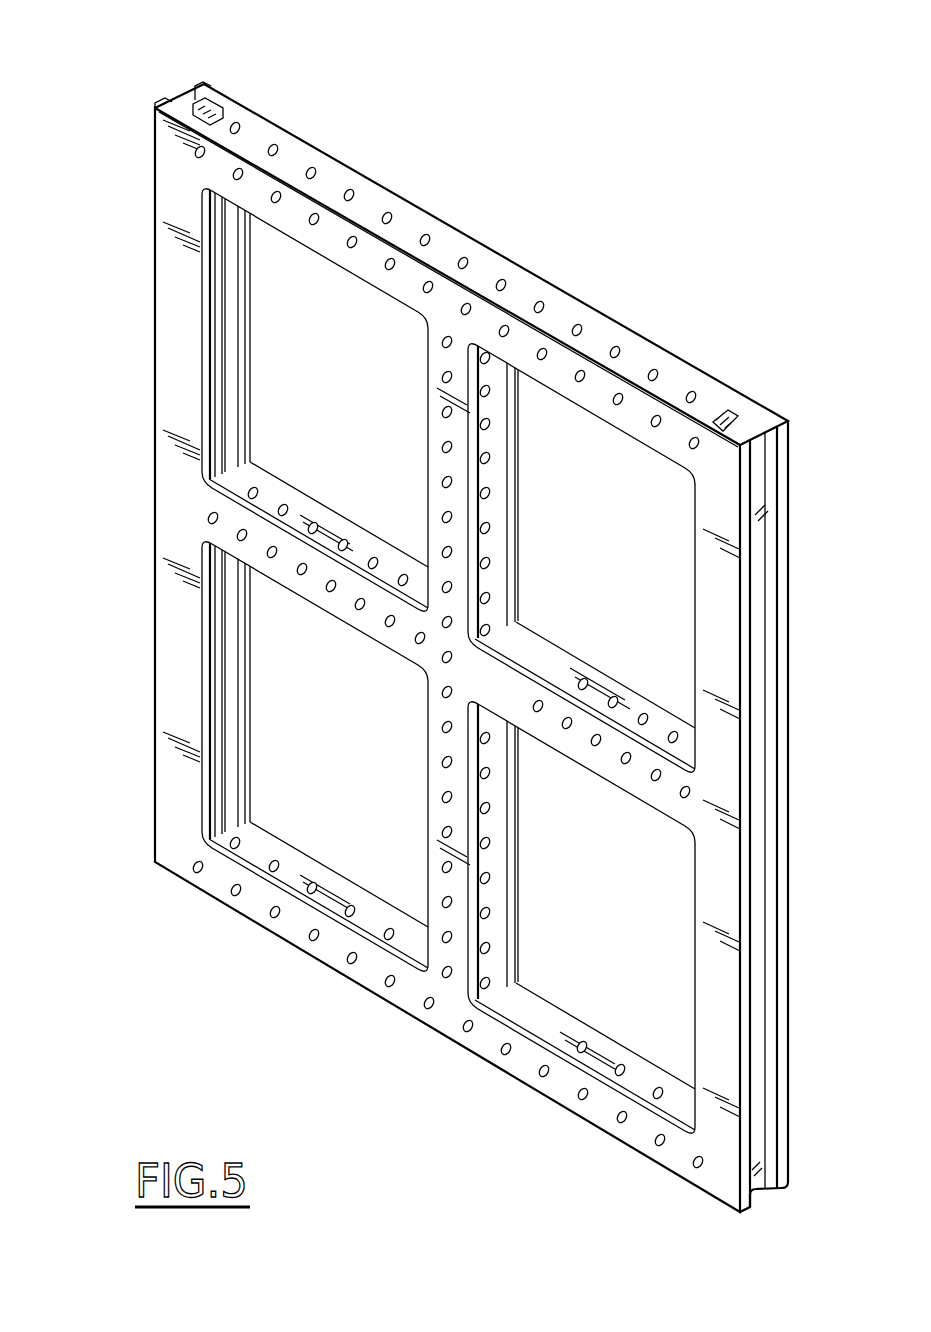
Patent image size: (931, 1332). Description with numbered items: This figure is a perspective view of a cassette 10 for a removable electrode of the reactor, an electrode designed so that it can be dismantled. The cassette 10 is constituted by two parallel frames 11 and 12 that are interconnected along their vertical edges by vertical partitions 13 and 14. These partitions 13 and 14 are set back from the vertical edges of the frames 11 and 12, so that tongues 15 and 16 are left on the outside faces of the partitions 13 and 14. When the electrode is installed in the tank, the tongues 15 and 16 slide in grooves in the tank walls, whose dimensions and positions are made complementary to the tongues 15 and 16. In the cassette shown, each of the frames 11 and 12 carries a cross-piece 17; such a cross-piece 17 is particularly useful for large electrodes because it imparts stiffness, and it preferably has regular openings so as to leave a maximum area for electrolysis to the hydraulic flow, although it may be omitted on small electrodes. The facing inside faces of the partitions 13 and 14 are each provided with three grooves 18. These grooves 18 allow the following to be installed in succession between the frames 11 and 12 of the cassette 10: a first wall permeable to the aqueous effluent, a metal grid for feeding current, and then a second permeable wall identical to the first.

The cassette 10 is at (430, 640).
The frame 11 is at (408, 246).
The frame 12 is at (362, 170).
The vertical partition 13 is at (752, 418).
The vertical partition 14 is at (190, 102).
The tongue 15 is at (740, 1212).
The tongue 16 is at (212, 82).
The cross-piece 17 is at (287, 562).
The groove 18 is at (716, 420).